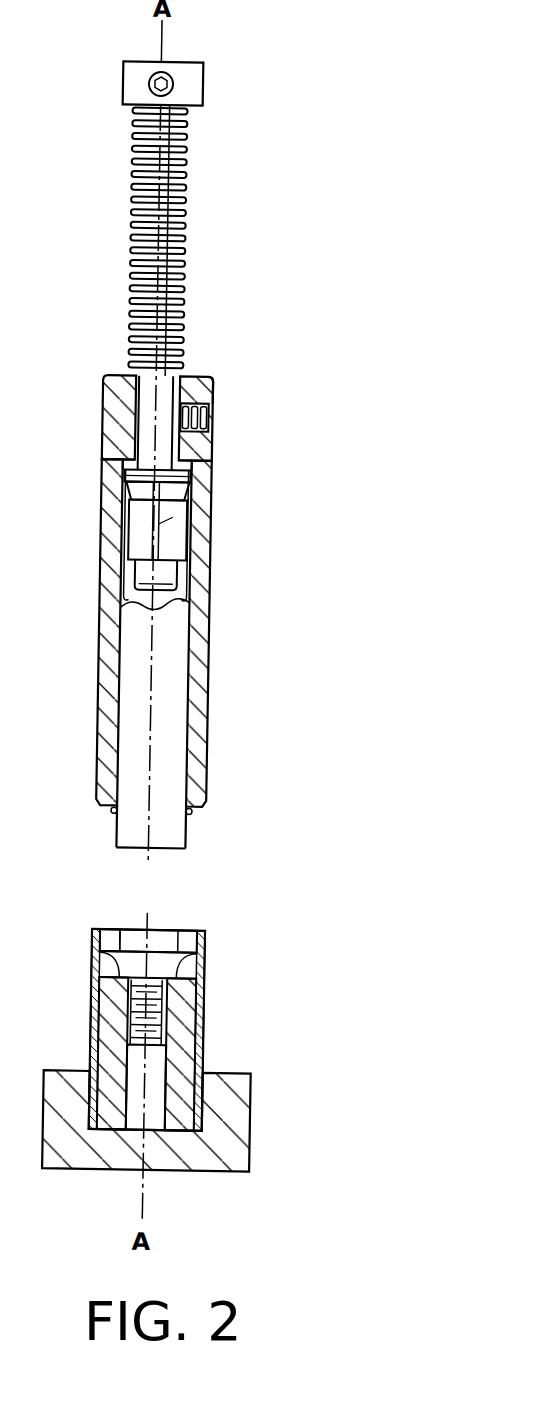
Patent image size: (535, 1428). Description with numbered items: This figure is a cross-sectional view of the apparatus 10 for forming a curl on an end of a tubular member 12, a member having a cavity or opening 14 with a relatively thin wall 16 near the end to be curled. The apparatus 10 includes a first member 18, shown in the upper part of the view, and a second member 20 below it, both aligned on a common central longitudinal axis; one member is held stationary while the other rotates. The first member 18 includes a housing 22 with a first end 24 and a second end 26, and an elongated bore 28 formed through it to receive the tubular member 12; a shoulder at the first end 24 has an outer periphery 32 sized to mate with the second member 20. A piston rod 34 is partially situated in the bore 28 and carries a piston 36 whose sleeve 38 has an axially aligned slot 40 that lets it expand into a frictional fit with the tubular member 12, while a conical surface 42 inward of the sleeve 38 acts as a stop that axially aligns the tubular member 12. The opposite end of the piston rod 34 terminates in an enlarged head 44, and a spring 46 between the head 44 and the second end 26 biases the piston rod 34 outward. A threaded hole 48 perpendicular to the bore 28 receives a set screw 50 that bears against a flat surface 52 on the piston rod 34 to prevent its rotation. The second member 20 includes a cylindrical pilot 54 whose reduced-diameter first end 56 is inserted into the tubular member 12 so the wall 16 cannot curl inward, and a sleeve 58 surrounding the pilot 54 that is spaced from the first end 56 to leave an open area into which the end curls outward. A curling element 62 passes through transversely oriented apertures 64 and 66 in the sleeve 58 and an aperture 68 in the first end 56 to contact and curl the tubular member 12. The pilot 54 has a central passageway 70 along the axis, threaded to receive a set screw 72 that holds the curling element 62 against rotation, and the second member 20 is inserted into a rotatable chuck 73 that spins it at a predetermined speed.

The apparatus 10 is at (276, 283).
The tubular member 12 is at (199, 842).
The cavity or opening 14 is at (150, 832).
The wall 16 is at (116, 633).
The first member 18 is at (225, 505).
The second member 20 is at (309, 948).
The housing 22 is at (221, 626).
The first end 24 is at (203, 821).
The second end 26 is at (194, 378).
The bore 28 is at (109, 443).
The outer periphery 32 is at (204, 815).
The piston rod 34 is at (155, 407).
The piston 36 is at (107, 477).
The sleeve 38 is at (178, 548).
The slot 40 is at (192, 521).
The conical surface 42 is at (110, 517).
The enlarged head 44 is at (203, 78).
The spring 46 is at (185, 178).
The threaded hole 48 is at (218, 430).
The set screw 50 is at (218, 413).
The flat surface 52 is at (218, 392).
The pilot 54 is at (203, 1057).
The first end 56 is at (174, 932).
The sleeve 58 is at (221, 1018).
The curling element 62 is at (201, 958).
The aperture 64 is at (220, 970).
The aperture 66 is at (107, 964).
The aperture 68 is at (106, 940).
The central passageway 70 is at (150, 1117).
The set screw 72 is at (146, 1010).
The rotatable chuck 73 is at (267, 1130).